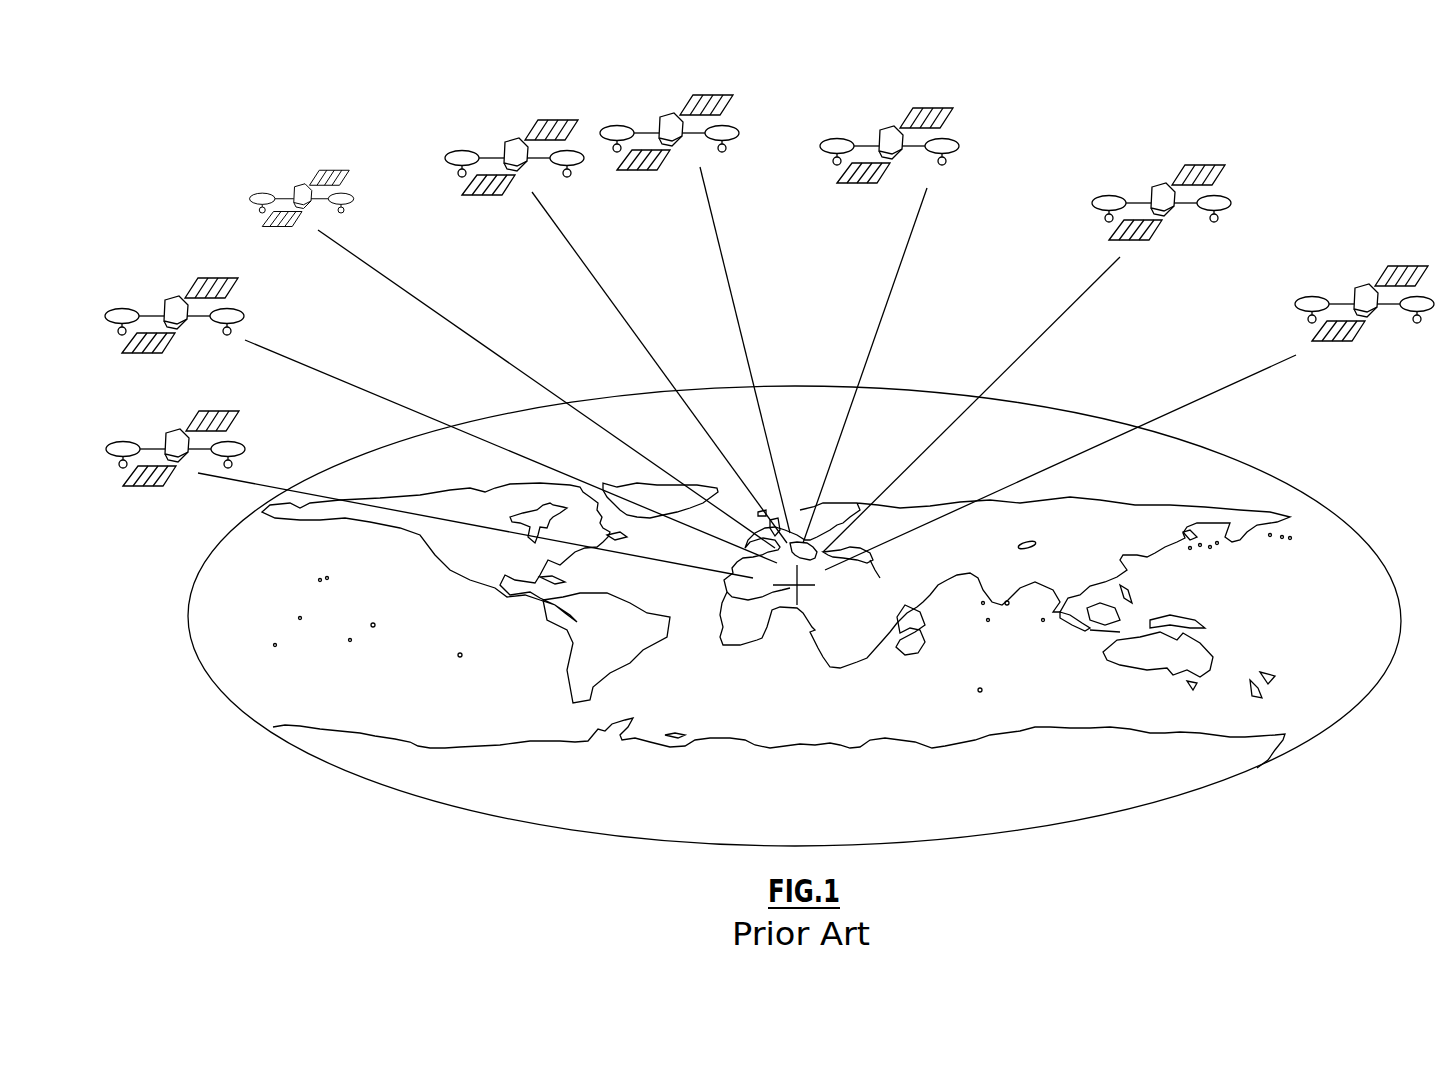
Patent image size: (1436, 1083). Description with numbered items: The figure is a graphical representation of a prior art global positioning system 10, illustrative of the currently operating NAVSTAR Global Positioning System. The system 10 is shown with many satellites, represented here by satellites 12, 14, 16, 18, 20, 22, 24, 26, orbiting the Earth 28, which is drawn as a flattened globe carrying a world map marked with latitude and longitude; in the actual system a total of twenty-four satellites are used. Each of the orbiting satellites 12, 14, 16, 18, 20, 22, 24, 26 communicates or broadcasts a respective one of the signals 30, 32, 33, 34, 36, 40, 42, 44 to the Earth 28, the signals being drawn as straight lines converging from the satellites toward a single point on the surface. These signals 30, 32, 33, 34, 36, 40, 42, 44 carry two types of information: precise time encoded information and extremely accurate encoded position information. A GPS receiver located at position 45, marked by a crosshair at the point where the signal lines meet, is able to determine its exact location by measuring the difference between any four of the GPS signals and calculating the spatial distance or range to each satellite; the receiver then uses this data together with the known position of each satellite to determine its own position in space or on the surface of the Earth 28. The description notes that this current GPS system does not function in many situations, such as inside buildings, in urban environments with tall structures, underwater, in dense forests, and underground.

The global positioning system 10 is at (319, 133).
The satellite 12 is at (1361, 272).
The satellite 14 is at (1248, 180).
The satellite 16 is at (973, 122).
The satellite 18 is at (758, 108).
The satellite 20 is at (505, 138).
The satellite 22 is at (360, 163).
The satellite 24 is at (168, 300).
The satellite 26 is at (168, 432).
The Earth 28 is at (1301, 491).
The signal 30 is at (1216, 393).
The signal 32 is at (1041, 337).
The signal 33 is at (593, 272).
The signal 34 is at (876, 342).
The signal 36 is at (738, 318).
The signal 40 is at (462, 330).
The signal 42 is at (331, 376).
The signal 44 is at (264, 485).
The position 45 is at (790, 587).